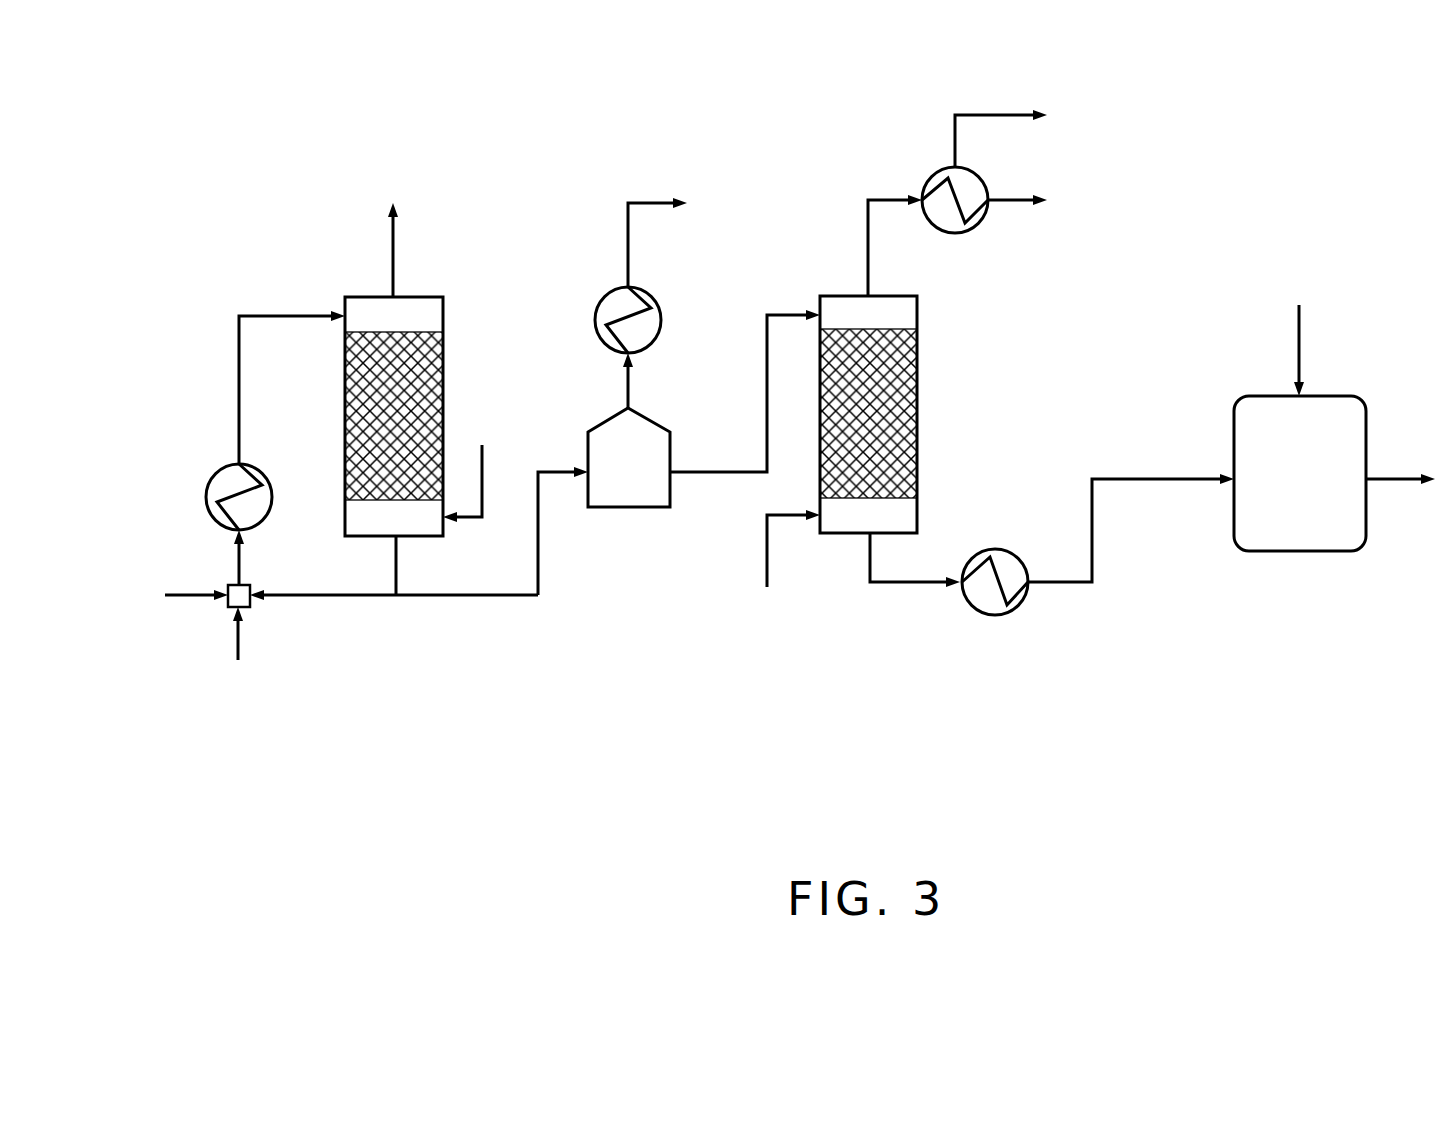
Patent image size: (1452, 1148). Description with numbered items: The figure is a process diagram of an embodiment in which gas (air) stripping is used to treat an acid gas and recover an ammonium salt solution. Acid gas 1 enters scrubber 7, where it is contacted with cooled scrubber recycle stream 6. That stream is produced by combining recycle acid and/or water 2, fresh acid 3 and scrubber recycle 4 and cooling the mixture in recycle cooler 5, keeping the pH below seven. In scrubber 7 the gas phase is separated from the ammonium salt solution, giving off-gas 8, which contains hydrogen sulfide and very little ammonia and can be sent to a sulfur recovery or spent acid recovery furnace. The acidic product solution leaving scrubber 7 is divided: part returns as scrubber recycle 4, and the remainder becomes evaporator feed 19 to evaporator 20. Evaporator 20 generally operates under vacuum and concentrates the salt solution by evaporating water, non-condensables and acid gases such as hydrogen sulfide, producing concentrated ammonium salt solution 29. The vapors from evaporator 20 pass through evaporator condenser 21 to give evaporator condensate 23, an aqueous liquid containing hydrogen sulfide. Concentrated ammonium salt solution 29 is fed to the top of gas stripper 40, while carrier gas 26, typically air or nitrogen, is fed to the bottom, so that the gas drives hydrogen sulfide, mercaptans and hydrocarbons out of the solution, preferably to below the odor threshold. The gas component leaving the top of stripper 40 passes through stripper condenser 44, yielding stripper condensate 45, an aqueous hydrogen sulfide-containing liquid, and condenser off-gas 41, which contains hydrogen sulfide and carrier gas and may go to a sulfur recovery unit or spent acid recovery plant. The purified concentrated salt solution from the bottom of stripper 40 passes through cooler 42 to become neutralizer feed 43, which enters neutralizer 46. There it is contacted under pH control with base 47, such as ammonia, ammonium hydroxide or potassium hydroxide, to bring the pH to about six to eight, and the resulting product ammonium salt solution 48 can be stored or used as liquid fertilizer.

The acid gas 1 is at (483, 452).
The recycle acid and/or water 2 is at (241, 640).
The fresh acid 3 is at (182, 594).
The scrubber recycle 4 is at (296, 598).
The recycle cooler 5 is at (208, 480).
The cooled scrubber recycle stream 6 is at (237, 351).
The scrubber 7 is at (433, 296).
The off-gas 8 is at (392, 250).
The evaporator feed 19 is at (487, 597).
The evaporator 20 is at (616, 477).
The evaporator condenser 21 is at (598, 303).
The evaporator condensate 23 is at (627, 223).
The gas 26 is at (768, 567).
The concentrated ammonium salt solution 29 is at (770, 393).
The gas stripper 40 is at (895, 295).
The condenser off-gas 41 is at (1001, 118).
The cooler 42 is at (1020, 554).
The neutralizer feed 43 is at (1093, 527).
The stripper condenser 44 is at (932, 170).
The stripper condensate 45 is at (1009, 205).
The neutralizer 46 is at (1286, 495).
The base 47 is at (1301, 358).
The product ammonium salt solution 48 is at (1393, 475).